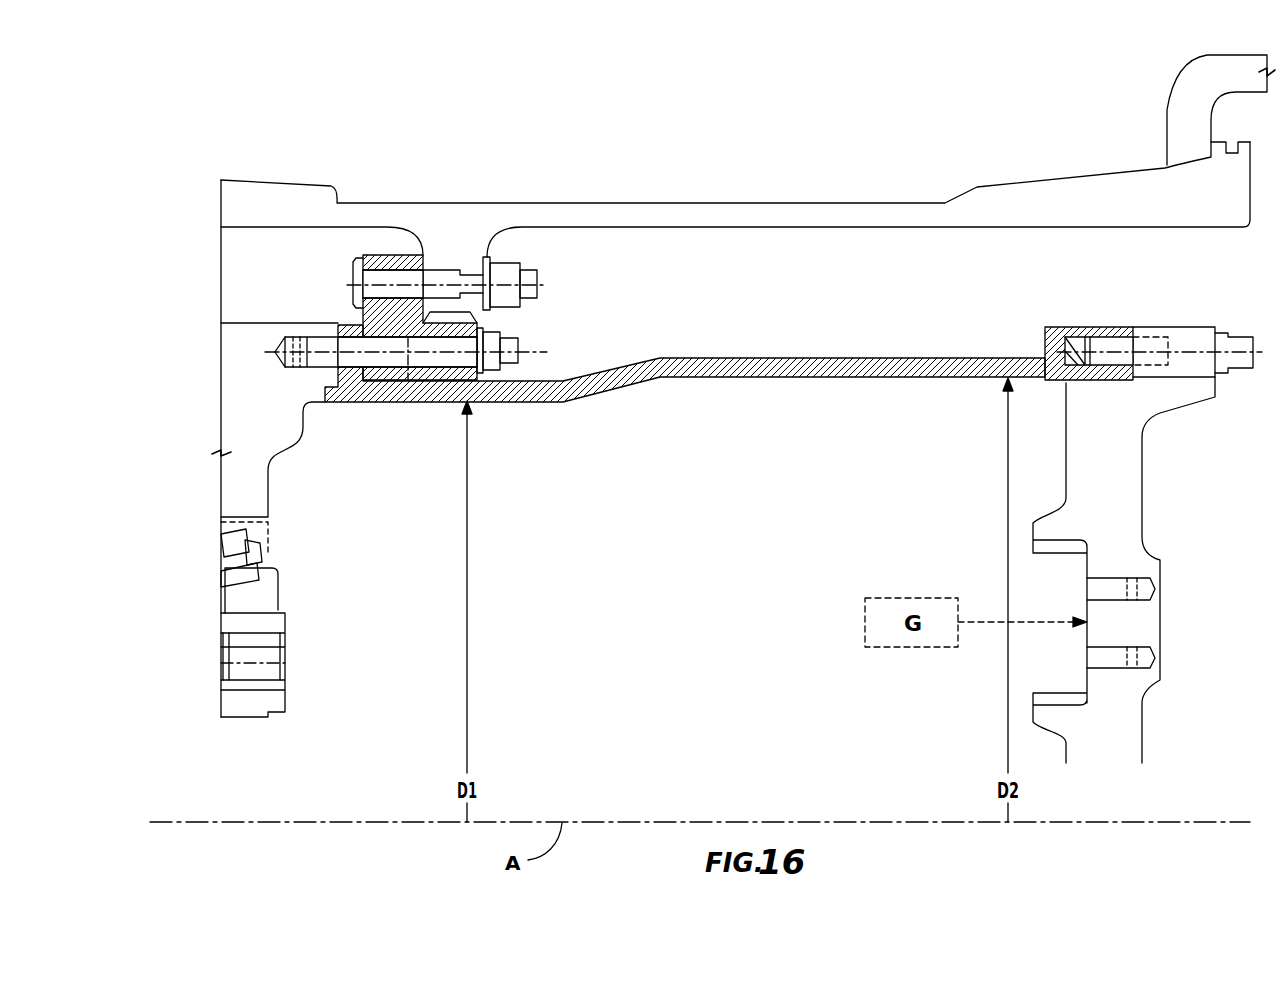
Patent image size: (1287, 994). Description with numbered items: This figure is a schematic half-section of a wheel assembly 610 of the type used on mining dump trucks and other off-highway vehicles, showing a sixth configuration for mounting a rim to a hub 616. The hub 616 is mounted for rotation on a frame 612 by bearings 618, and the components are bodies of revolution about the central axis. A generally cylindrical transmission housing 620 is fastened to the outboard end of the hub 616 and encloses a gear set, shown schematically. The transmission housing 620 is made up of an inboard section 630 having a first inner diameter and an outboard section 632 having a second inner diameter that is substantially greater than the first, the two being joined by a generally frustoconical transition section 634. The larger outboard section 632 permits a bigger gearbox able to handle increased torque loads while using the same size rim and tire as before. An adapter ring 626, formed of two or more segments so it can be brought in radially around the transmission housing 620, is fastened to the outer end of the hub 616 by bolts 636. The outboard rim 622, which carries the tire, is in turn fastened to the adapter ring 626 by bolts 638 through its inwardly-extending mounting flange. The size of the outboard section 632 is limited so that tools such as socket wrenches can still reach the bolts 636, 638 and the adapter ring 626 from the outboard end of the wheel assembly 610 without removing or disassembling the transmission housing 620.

The wheel assembly 610 is at (777, 173).
The frame 612 is at (232, 706).
The hub 616 is at (240, 400).
The bearings 618 is at (232, 548).
The transmission housing 620 is at (751, 343).
The rim 622 is at (893, 213).
The adapter ring 626 is at (358, 262).
The inboard section 630 is at (533, 386).
The outboard section 632 is at (892, 362).
The transition section 634 is at (615, 375).
The bolts 636 is at (500, 337).
The bolts 638 is at (512, 262).